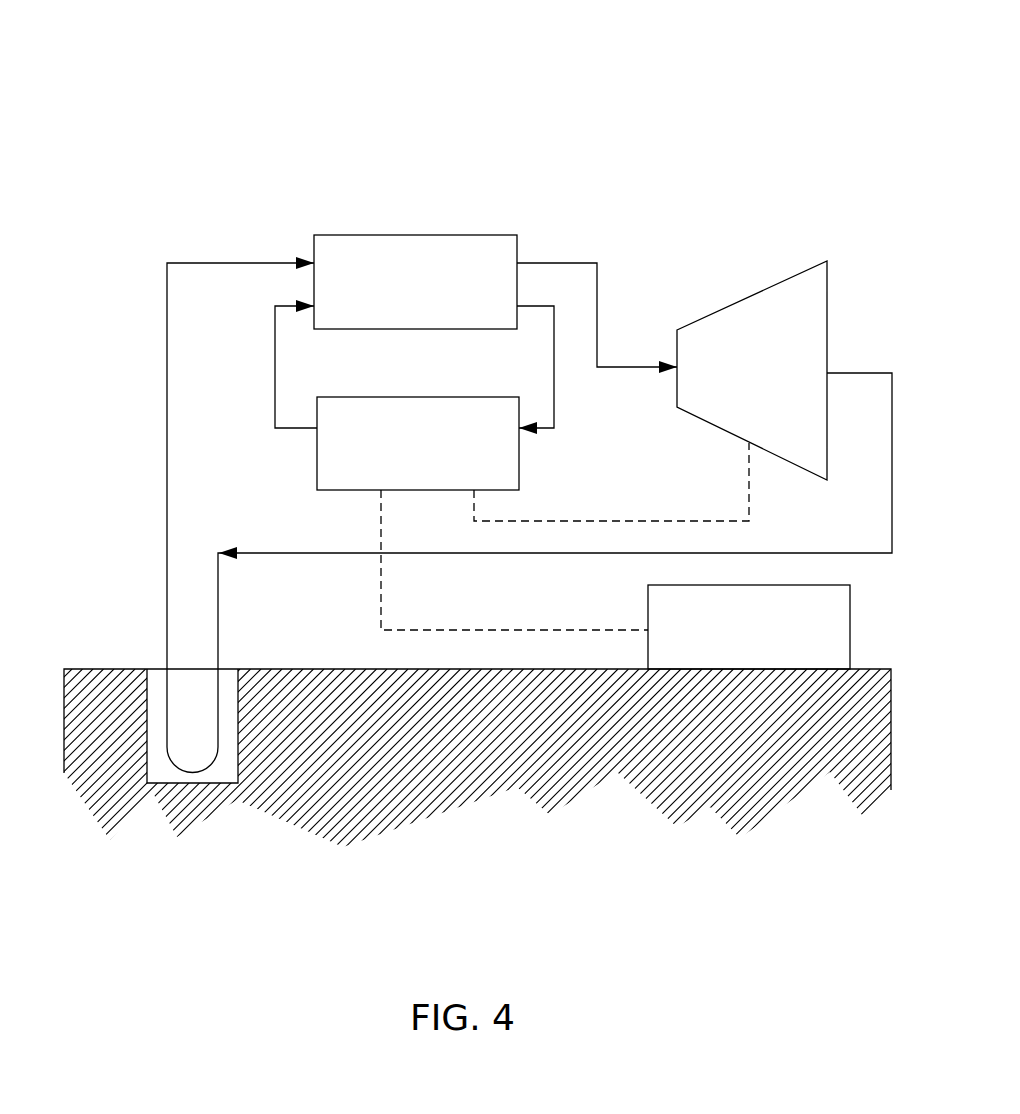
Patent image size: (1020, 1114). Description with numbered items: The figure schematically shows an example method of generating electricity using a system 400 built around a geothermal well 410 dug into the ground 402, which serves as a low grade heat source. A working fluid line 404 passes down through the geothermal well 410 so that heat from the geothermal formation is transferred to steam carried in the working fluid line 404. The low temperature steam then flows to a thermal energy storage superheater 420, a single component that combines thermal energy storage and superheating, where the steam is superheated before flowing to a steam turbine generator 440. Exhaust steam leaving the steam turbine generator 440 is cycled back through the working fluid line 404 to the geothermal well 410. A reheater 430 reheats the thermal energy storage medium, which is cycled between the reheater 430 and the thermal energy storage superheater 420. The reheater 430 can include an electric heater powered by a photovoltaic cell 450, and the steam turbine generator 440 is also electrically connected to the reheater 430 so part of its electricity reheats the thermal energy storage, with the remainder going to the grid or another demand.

The geothermal energy system 400 is at (150, 72).
The ground 402 is at (85, 680).
The working fluid line 404 is at (167, 473).
The geothermal well 410 is at (158, 680).
The thermal energy storage superheater 420 is at (392, 297).
The reheater 430 is at (394, 457).
The steam turbine generator 440 is at (728, 383).
The photovoltaic cell 450 is at (725, 638).